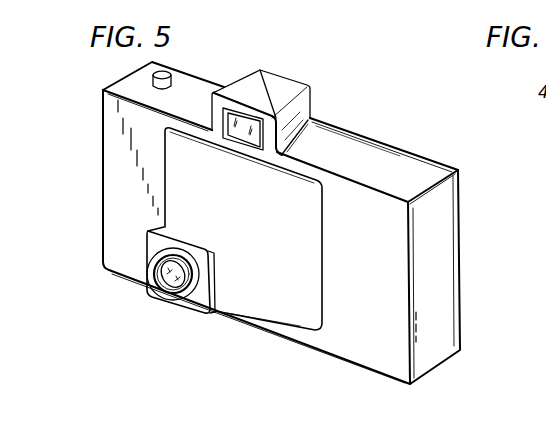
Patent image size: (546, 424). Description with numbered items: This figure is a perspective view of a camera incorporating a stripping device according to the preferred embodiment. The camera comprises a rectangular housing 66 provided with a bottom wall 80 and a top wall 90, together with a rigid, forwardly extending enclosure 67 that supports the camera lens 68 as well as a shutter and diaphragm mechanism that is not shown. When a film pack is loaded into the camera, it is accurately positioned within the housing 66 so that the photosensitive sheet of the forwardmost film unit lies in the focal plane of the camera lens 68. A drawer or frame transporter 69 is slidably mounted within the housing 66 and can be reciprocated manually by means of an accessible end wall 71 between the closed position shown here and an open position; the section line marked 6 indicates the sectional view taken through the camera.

The camera housing 66 is at (118, 170).
The front panel 67 is at (300, 284).
The lens 68 is at (174, 279).
The slot 69 is at (402, 331).
The end wall 71 is at (446, 330).
The bottom wall 80 is at (278, 338).
The top wall 90 is at (383, 165).
The section line 6- 6 is at (376, 373).